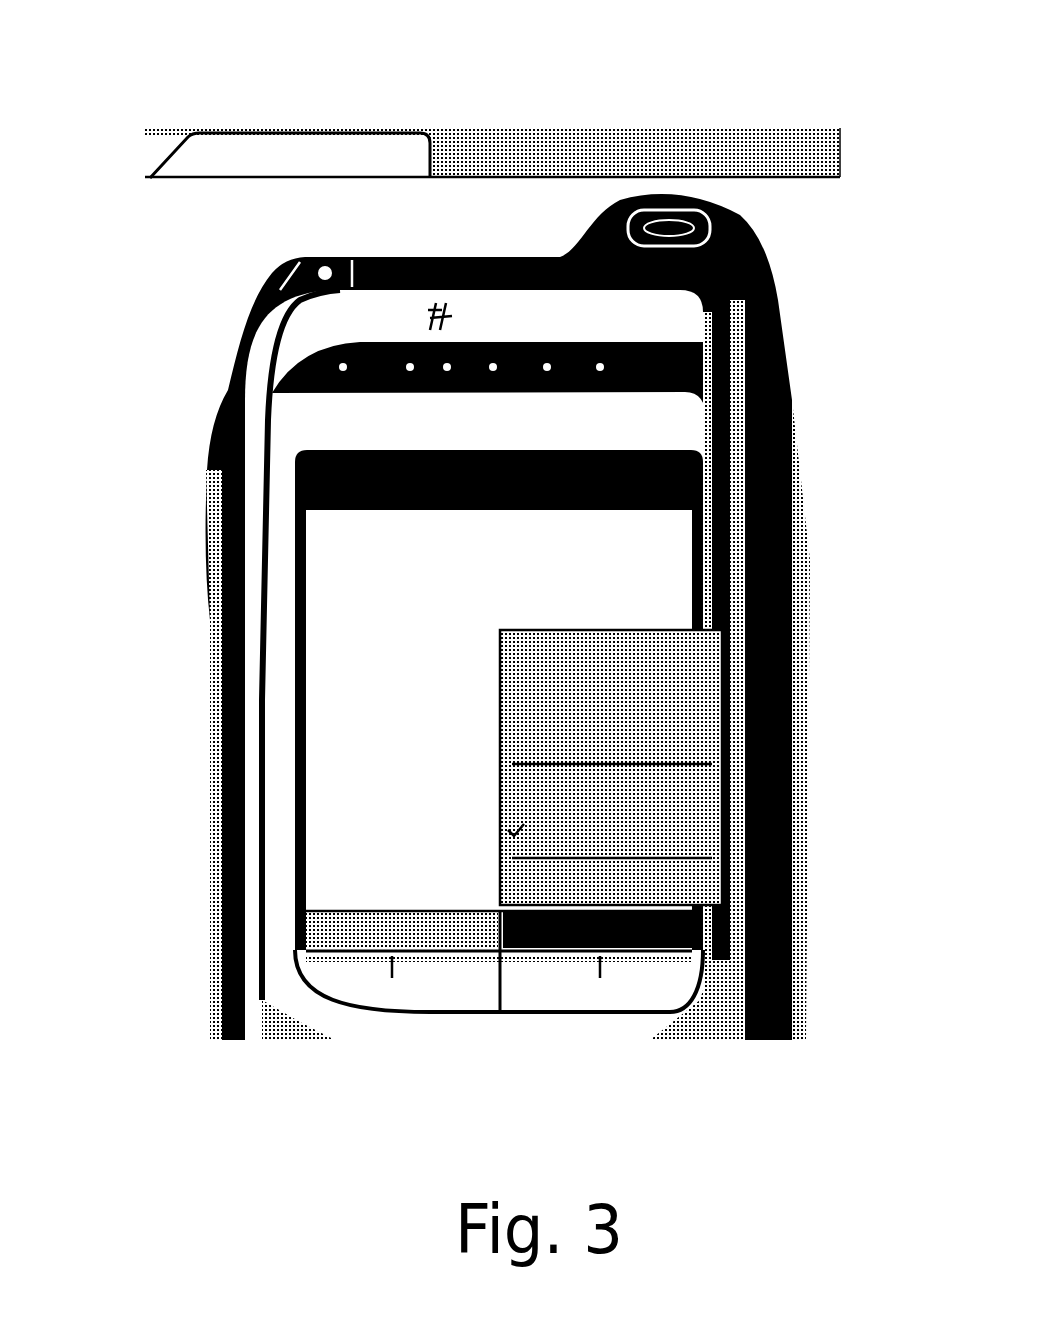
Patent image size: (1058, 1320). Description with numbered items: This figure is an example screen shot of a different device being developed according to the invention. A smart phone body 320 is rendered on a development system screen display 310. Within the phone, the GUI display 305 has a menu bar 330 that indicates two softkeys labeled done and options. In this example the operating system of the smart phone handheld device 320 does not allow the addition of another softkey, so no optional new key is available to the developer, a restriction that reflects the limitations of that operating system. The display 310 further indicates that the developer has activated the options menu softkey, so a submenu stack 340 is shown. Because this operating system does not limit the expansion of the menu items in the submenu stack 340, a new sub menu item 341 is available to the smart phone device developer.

The GUI display 305 is at (350, 690).
The development system screen display 310 is at (390, 128).
The smart phone body 320 is at (775, 288).
The menu bar 330 is at (298, 940).
The submenu stack 340 is at (707, 704).
The new sub menu item 341 is at (708, 878).